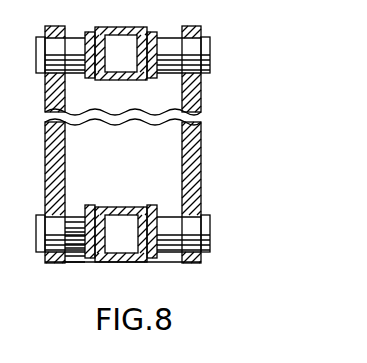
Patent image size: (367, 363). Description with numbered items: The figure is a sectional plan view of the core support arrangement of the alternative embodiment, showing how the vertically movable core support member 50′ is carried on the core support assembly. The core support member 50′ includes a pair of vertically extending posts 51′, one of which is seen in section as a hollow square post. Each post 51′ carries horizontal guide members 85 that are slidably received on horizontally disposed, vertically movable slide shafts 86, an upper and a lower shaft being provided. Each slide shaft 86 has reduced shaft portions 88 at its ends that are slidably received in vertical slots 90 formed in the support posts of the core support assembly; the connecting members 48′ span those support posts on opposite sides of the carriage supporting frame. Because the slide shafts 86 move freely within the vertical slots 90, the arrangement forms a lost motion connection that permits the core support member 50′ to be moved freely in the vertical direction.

The connecting member 48′ is at (62, 157).
The vertically extending post 51′ is at (118, 80).
The horizontal guide member 85 is at (157, 210).
The slide shaft 86 is at (80, 222).
The reduced shaft portion 88 is at (190, 48).
The vertical slot 90 is at (56, 250).
The core support member 50′ is at (144, 267).